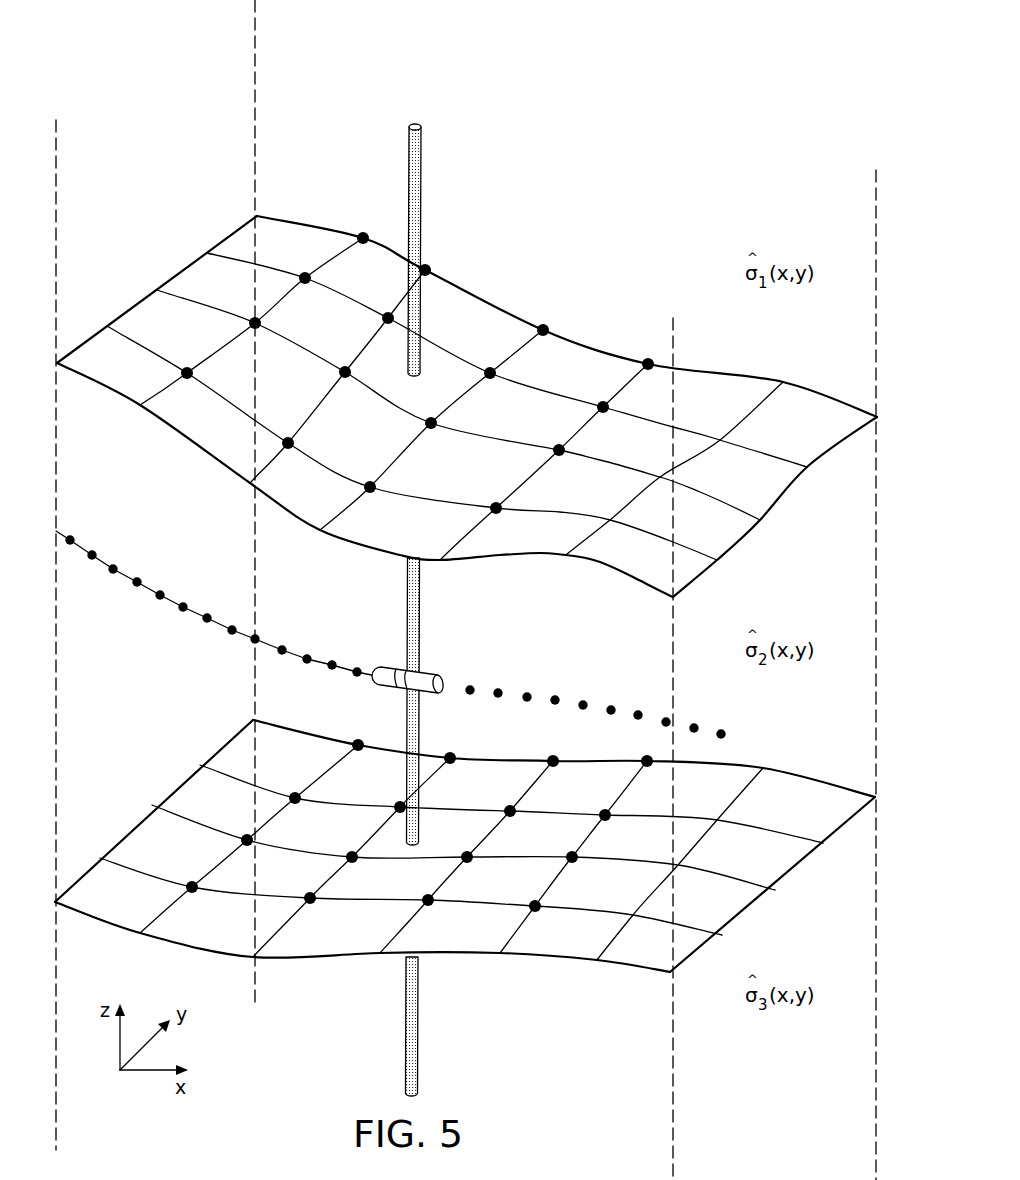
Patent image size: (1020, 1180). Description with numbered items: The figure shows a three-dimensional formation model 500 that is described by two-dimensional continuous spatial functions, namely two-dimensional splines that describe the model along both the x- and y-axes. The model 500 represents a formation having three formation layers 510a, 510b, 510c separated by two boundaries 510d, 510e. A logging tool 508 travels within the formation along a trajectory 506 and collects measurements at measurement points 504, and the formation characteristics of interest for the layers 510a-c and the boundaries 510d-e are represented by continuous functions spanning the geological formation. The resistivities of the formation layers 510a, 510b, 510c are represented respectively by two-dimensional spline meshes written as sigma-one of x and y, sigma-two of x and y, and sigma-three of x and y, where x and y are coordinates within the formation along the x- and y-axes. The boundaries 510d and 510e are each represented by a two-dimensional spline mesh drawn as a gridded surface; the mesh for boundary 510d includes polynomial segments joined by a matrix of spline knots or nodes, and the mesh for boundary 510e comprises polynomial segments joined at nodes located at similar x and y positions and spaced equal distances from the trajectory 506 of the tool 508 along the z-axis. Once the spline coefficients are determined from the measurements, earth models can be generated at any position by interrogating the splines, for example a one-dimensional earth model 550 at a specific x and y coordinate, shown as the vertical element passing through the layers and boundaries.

The 3D formation model 500 is at (681, 80).
The first formation layer 510a is at (168, 170).
The second formation layer 510b is at (166, 491).
The third formation layer 510c is at (167, 728).
The first boundary 510d is at (174, 276).
The second boundary 510e is at (169, 784).
The 1D earth model 550 is at (422, 192).
The measurement points 504 is at (92, 548).
The trajectory 506 is at (172, 603).
The logging tool 508 is at (428, 677).